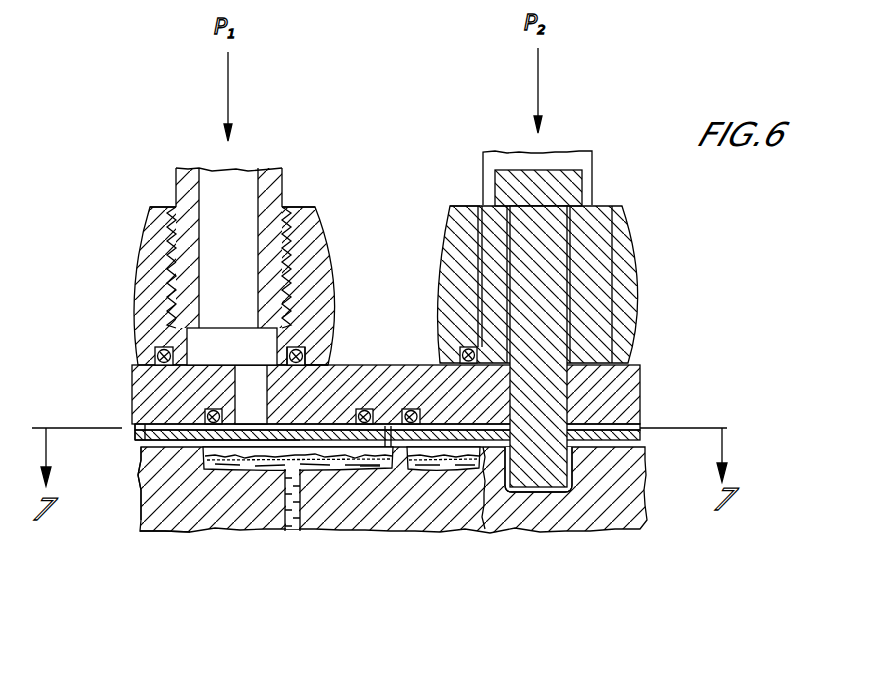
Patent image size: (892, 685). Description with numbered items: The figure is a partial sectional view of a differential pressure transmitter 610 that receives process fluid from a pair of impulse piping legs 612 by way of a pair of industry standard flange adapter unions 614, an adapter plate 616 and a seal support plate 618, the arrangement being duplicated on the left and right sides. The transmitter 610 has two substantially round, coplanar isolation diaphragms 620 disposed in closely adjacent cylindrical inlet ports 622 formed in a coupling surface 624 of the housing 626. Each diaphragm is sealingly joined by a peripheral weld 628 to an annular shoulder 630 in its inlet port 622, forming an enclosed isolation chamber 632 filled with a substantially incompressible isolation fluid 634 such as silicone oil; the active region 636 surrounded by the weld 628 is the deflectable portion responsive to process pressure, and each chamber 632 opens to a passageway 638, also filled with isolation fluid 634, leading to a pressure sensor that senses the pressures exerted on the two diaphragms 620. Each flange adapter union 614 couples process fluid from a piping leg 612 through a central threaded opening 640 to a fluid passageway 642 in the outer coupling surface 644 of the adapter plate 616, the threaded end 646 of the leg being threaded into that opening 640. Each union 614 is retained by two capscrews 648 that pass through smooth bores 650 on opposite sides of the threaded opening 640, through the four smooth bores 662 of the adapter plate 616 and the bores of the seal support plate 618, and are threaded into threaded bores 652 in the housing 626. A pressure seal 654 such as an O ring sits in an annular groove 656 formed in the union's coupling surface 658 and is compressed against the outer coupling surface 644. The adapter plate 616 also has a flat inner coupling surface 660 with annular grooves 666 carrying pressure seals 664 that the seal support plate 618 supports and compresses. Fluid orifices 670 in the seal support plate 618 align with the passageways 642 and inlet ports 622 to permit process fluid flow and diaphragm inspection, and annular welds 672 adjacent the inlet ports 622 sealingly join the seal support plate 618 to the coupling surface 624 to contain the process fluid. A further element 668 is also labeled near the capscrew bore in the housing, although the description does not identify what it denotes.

The differential pressure transmitter 610 is at (602, 540).
The impulse piping leg 612 is at (278, 169).
The flange adapter union 614 is at (303, 207).
The adapter plate 616 is at (641, 366).
The seal support plate 618 is at (641, 430).
The isolation diaphragm 620 is at (260, 470).
The cylindrical inlet port 622 is at (297, 449).
The coupling surface 624 is at (134, 438).
The housing 626 is at (476, 520).
The peripheral weld 628 is at (390, 450).
The annular shoulder 630 is at (378, 455).
The isolation chamber 632 is at (223, 485).
The isolation fluid 634 is at (224, 467).
The active region 636 is at (175, 522).
The passageway 638 is at (290, 522).
The central threaded opening 640 is at (190, 256).
The fluid passageway 642 is at (190, 325).
The outer coupling surface 644 is at (396, 370).
The threaded end 646 is at (178, 224).
The capscrew 648 is at (574, 190).
The smooth bore 650 is at (603, 228).
The threaded bore 652 is at (573, 480).
The pressure seal 654 is at (300, 348).
The annular groove 656 is at (283, 352).
The coupling surface 658 is at (318, 368).
The inner coupling surface 660 is at (460, 440).
The smooth bore 662 is at (605, 316).
The pressure seal 664 is at (208, 410).
The annular groove 666 is at (191, 448).
The bore wall 668 is at (570, 462).
The fluid orifice 670 is at (384, 450).
The annular weld 672 is at (140, 472).